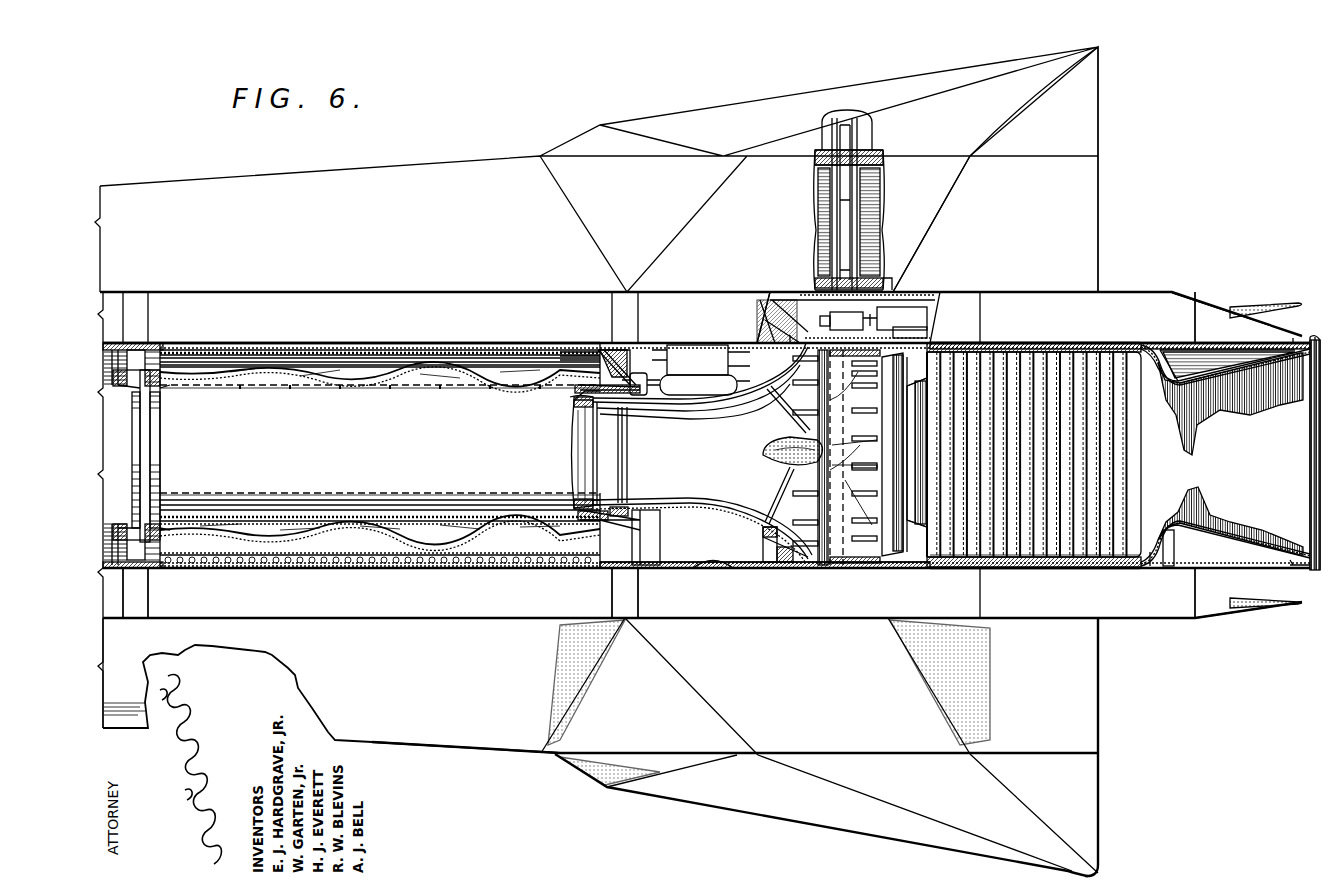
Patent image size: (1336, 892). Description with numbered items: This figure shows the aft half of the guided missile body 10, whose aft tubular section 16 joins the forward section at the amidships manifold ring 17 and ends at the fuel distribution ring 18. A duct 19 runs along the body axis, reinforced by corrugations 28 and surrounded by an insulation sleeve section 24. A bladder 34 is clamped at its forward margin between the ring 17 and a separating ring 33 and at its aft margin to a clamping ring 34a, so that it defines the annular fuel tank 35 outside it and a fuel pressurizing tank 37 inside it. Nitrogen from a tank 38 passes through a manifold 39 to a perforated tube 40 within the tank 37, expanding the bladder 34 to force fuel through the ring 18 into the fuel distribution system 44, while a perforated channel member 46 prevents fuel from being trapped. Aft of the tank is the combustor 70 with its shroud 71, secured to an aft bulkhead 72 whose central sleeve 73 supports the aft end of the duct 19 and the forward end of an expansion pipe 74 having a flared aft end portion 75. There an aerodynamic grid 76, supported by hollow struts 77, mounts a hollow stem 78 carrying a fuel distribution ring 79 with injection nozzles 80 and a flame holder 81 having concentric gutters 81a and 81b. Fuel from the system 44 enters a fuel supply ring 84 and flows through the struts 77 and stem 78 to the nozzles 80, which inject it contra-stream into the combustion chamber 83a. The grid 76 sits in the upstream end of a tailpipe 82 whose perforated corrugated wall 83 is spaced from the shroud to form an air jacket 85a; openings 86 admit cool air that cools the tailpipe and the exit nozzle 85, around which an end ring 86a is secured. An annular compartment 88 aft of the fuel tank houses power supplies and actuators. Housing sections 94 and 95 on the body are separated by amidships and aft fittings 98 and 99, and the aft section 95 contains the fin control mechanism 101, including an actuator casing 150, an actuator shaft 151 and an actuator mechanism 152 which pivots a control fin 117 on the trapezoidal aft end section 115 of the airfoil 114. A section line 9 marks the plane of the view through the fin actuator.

The section line 9- 9 is at (858, 78).
The body 10 is at (282, 333).
The aft tubular section 16 is at (458, 343).
The amidships manifold ring 17 is at (165, 350).
The fuel distribution ring 18 is at (570, 343).
The duct 19 is at (580, 438).
The insulation sleeve section 24 is at (362, 495).
The corrugations 28 is at (577, 402).
The separating ring 33 is at (146, 418).
The bladder 34 is at (397, 372).
The clamping ring 34a is at (588, 531).
The fuel tank 35 is at (354, 362).
The fuel pressurizing tank 37 is at (435, 522).
The nitrogen tank 38 is at (697, 389).
The manifold 39 is at (641, 380).
The tube 40 is at (470, 389).
The fuel distribution system 44 is at (698, 353).
The perforated channel member 46 is at (461, 559).
The combustor 70 is at (1008, 325).
The shroud 71 is at (1078, 343).
The aft bulkhead 72 is at (639, 545).
The central sleeve 73 is at (626, 512).
The expansion pipe 74 is at (697, 508).
The flared aft end portion 75 is at (770, 541).
The aerodynamic grid 76 is at (830, 533).
The struts 77 is at (786, 493).
The stem 78 is at (770, 460).
The fuel distribution ring 79 is at (882, 485).
The injection nozzles 80 is at (867, 373).
The flame holder 81 is at (913, 532).
The outer gutter 81a is at (897, 425).
The inner gutter 81b is at (920, 463).
The tailpipe 82 is at (1013, 555).
The perforated corrugated wall 83 is at (1073, 566).
The combustion chamber 83a is at (1070, 435).
The fuel supply ring 84 is at (768, 341).
The exit nozzle 85 is at (1217, 534).
The air jacket 85a is at (968, 568).
The openings 86 is at (826, 566).
The end ring 86a is at (1303, 572).
The annular compartment 88 is at (708, 566).
The amidships housing section 94 is at (500, 616).
The aft housing section 95 is at (1172, 301).
The amidships fitting 98 is at (140, 606).
The aft fitting 99 is at (632, 605).
The fin control and actuating mechanism 101 is at (893, 283).
The airfoil 114 is at (246, 161).
The trapezoidal aft end section 115 is at (1072, 184).
The control fin 117 is at (1077, 98).
The actuator casing 150 is at (810, 300).
The actuator shaft 151 is at (845, 214).
The actuator mechanism 152 is at (912, 323).